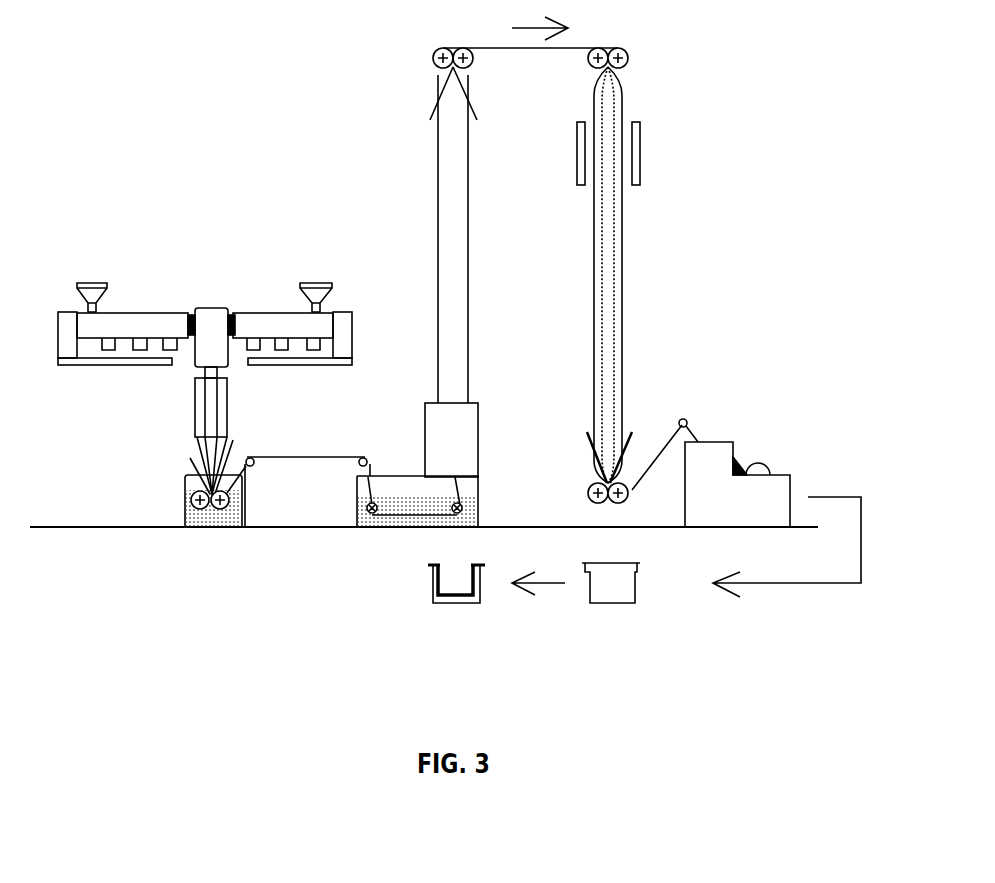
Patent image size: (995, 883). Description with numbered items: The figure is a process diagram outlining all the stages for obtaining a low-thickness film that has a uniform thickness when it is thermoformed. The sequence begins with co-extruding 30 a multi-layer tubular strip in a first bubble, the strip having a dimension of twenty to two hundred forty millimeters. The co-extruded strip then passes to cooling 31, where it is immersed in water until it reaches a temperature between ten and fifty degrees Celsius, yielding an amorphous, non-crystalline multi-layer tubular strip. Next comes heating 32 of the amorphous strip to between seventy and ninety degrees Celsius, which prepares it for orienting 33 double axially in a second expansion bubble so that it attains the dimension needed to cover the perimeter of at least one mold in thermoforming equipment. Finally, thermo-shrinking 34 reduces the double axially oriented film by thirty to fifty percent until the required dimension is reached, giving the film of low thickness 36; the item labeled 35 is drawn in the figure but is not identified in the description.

The co-extruding step 30 is at (192, 441).
The cooling step 31 is at (194, 508).
The heating step 32 is at (486, 402).
The orienting step 33 is at (393, 168).
The thermo-shrinking step 34 is at (640, 266).
The formed cup 35 is at (425, 623).
The film of low thickness 36 is at (645, 636).